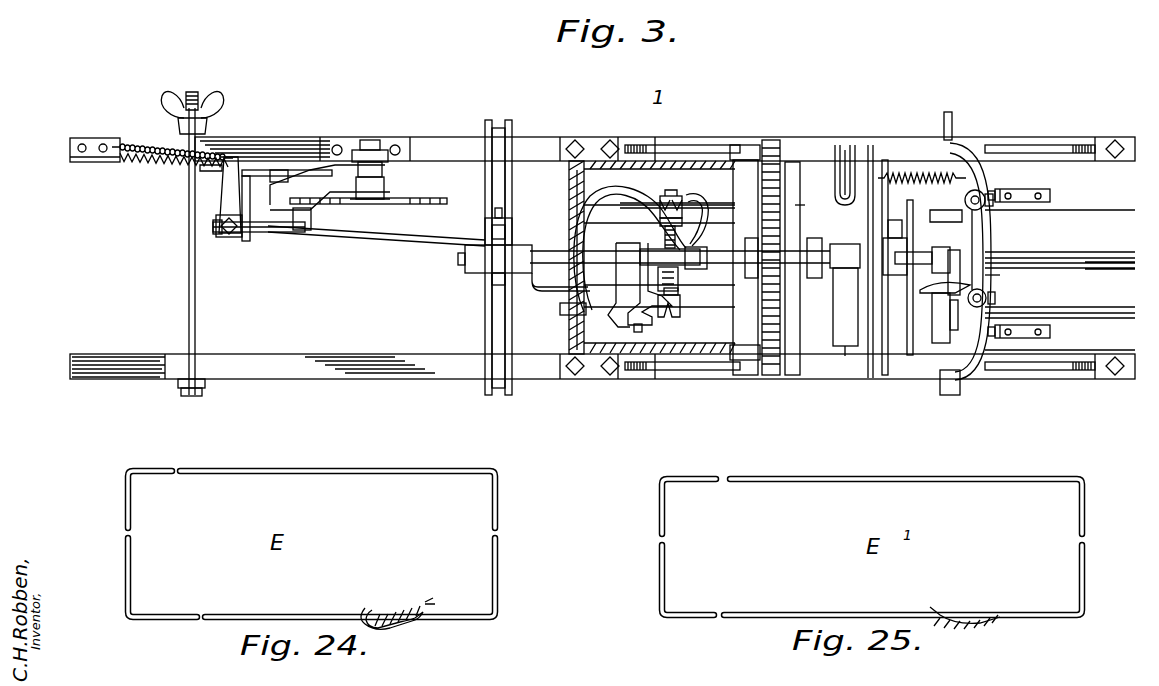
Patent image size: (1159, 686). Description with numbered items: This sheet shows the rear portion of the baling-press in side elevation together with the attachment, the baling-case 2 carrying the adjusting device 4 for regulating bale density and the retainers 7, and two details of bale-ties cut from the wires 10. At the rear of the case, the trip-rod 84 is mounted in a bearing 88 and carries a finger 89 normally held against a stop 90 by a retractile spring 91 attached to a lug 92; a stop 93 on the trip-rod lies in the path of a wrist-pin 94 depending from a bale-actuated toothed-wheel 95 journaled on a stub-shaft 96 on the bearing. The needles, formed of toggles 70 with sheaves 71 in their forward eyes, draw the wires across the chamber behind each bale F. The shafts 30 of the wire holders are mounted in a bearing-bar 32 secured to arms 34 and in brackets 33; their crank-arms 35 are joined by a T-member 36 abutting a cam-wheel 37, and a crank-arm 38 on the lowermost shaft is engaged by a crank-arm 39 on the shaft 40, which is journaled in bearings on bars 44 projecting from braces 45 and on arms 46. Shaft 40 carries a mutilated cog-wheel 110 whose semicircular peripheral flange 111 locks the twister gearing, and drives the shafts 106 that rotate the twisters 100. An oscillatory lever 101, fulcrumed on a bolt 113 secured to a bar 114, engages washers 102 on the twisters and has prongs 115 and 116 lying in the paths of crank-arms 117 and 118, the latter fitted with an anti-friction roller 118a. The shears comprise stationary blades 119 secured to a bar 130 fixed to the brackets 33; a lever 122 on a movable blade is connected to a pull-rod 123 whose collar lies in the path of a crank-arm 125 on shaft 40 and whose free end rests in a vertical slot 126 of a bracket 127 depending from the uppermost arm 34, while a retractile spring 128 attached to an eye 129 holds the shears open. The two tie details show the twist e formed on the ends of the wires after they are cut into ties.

In FIG. 3, the baling-case 2 is at (542, 142).
In FIG. 3, the adjusting device 4 is at (198, 108).
In FIG. 3, the retainers 7 is at (1052, 195).
In FIG. 3, the wires 10 is at (572, 207).
In FIG. 3, the horizontal shafts 30 is at (984, 208).
In FIG. 3, the bearing-bar 32 is at (1000, 275).
In FIG. 3, the brackets 33 is at (688, 147).
In FIG. 3, the arms 34 is at (948, 112).
In FIG. 3, the crank-arms 35 is at (982, 196).
In FIG. 3, the T-member 36 is at (988, 298).
In FIG. 3, the cam-wheel 37 is at (920, 320).
In FIG. 3, the crank-arm 38 is at (948, 300).
In FIG. 3, the crank-arm 39 is at (945, 340).
In FIG. 3, the shaft 40 is at (1093, 258).
In FIG. 3, the bars 44 is at (750, 248).
In FIG. 3, the braces 45 is at (745, 330).
In FIG. 3, the arms 46 is at (495, 170).
In FIG. 3, the toggles 70 is at (1122, 212).
In FIG. 3, the sheaves 71 is at (950, 222).
In FIG. 3, the trip-rod 84 is at (382, 243).
In FIG. 3, the bearing 88 is at (312, 168).
In FIG. 3, the finger 89 is at (230, 158).
In FIG. 3, the stop 90 is at (262, 172).
In FIG. 3, the retractile spring 91 is at (140, 143).
In FIG. 3, the lug 92 is at (90, 141).
In FIG. 3, the stop 93 is at (288, 222).
In FIG. 3, the wrist-pin 94 is at (303, 230).
In FIG. 3, the bale-actuated toothed-wheel 95 is at (418, 205).
In FIG. 3, the stub-shaft 96 is at (370, 140).
In FIG. 3, the twisters 100 is at (645, 208).
In FIG. 3, the oscillatory lever 101 is at (670, 198).
In FIG. 3, the washers 102 is at (668, 320).
In FIG. 3, the shaft 106 is at (813, 205).
In FIG. 3, the mutilated cog-wheel 110 is at (770, 140).
In FIG. 3, the semicircular peripheral flange 111 is at (776, 330).
In FIG. 3, the bolt 113 is at (678, 198).
In FIG. 3, the bar 114 is at (540, 290).
In FIG. 3, the irregular prong 115 is at (705, 205).
In FIG. 3, the irregular prong 116 is at (566, 318).
In FIG. 3, the crank-arm 117 is at (676, 269).
In FIG. 3, the crank-arm 118 is at (612, 318).
In FIG. 3, the anti-friction roller 118a is at (636, 332).
In FIG. 3, the stationary blades 119 is at (880, 350).
In FIG. 3, the lever 122 is at (858, 215).
In FIG. 3, the pull-rod 123 is at (870, 158).
In FIG. 3, the crank-arm 125 is at (845, 350).
In FIG. 3, the vertical slot 126 is at (846, 150).
In FIG. 3, the bracket 127 is at (838, 150).
In FIG. 3, the retractile spring 128 is at (922, 173).
In FIG. 3, the eye 129 is at (975, 165).
In FIG. 3, the bar 130 is at (895, 330).
In FIG. 3, the bale F is at (566, 180).
In FIG. 24, the knot e is at (375, 608).